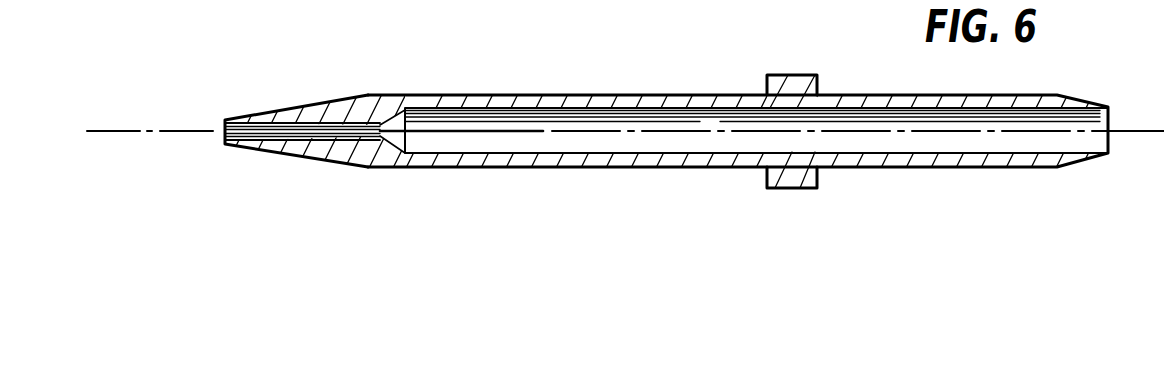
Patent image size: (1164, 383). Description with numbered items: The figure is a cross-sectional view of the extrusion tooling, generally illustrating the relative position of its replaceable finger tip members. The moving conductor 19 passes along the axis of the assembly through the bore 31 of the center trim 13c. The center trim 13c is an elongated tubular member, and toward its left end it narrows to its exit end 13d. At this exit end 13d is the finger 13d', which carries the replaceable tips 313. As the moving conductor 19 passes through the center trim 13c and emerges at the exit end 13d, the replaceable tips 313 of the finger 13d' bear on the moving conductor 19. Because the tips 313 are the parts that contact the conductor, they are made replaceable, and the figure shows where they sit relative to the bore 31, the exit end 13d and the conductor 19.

The center trim 13c is at (532, 87).
The exit end 13d is at (271, 134).
The finger 13d' is at (315, 120).
The bore 31 is at (643, 123).
The replaceable finger tips 313 is at (283, 130).
The moving conductor 19 is at (1133, 130).